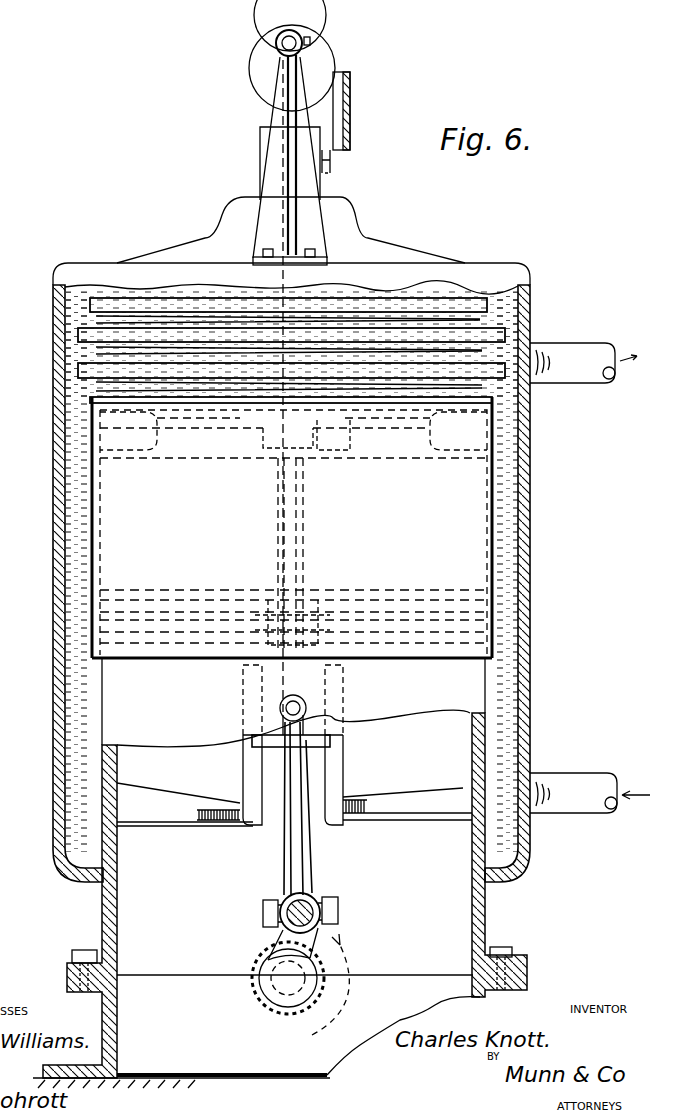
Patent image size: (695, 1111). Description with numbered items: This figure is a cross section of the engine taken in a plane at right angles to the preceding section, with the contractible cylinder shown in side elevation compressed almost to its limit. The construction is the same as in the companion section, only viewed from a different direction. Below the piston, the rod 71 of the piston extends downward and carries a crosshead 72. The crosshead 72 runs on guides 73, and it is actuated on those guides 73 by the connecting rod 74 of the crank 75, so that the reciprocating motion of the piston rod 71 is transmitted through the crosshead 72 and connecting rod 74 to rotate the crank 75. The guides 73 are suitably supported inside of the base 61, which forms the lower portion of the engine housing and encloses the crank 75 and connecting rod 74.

The base 61 is at (117, 783).
The rod 71 is at (306, 565).
The crosshead 72 is at (333, 741).
The guides 73 is at (333, 773).
The connecting rod 74 is at (290, 838).
The crank 75 is at (274, 962).